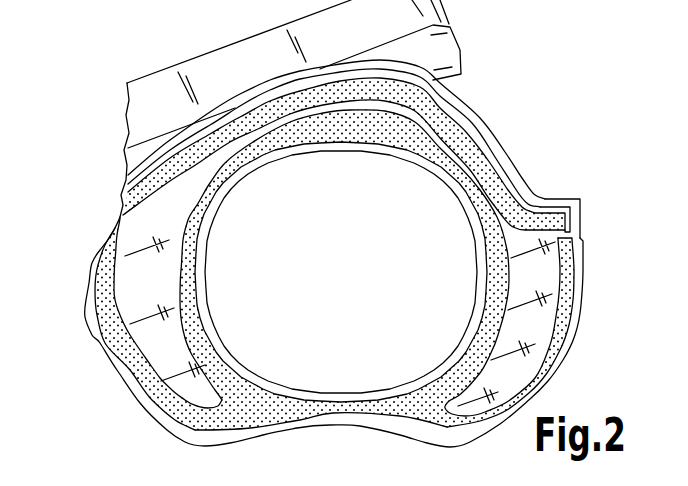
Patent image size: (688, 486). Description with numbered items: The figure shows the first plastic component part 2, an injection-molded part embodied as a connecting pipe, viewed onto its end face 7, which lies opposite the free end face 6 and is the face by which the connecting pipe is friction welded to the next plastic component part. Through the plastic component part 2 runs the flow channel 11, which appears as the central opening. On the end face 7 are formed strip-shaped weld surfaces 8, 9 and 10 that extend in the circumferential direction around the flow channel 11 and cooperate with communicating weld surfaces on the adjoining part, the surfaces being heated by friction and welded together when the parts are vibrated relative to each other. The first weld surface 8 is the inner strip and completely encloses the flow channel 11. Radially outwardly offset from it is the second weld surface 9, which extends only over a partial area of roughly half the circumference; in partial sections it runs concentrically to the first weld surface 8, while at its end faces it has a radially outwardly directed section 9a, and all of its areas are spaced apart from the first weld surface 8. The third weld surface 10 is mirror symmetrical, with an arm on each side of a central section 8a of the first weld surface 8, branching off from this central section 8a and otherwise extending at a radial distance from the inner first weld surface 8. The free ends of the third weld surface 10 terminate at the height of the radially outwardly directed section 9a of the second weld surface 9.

The first plastic component part 2 is at (95, 128).
The free end face 6 is at (219, 43).
The end face 7 is at (547, 297).
The first weld surface 8 is at (495, 270).
The central section 8a is at (322, 404).
The second weld surface 9 is at (452, 128).
The radially outwardly directed section 9a is at (548, 220).
The third weld surface 10 is at (135, 363).
The flow channel 11 is at (357, 245).